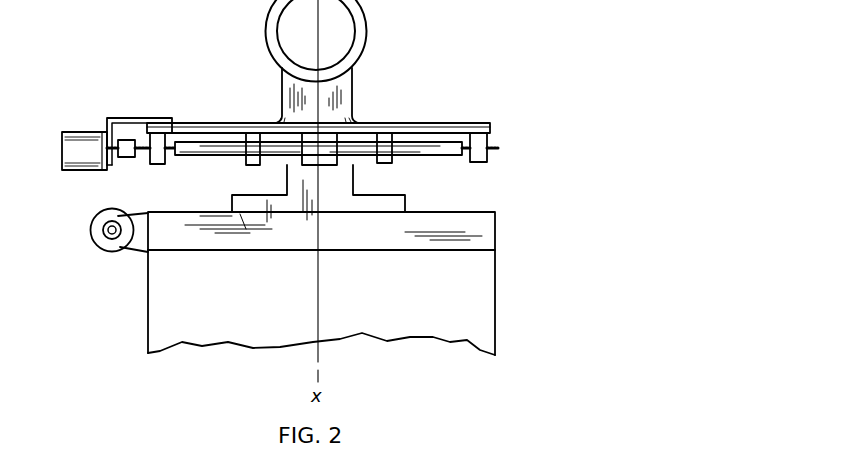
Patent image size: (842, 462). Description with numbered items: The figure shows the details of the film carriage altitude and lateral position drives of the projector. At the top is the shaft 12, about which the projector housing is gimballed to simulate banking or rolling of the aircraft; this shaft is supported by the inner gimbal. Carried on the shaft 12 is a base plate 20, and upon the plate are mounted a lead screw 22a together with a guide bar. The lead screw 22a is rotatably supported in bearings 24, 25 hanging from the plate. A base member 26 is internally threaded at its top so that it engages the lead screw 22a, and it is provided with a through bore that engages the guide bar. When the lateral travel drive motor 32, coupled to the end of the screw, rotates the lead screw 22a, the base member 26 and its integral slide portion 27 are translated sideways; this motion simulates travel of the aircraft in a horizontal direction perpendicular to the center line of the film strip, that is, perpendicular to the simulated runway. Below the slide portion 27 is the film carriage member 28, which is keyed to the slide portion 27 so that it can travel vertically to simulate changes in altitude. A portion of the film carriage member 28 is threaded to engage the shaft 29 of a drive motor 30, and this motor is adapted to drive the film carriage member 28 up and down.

The shaft 12 is at (349, 85).
The base plate 20 is at (488, 123).
The lead screw 22a is at (142, 158).
The bearing 24 is at (168, 160).
The bearing 25 is at (481, 163).
The base member 26 is at (340, 158).
The slide portion 27 is at (263, 194).
The film carriage member 28 is at (496, 228).
The shaft 29 is at (105, 229).
The drive motor 30 is at (118, 251).
The lateral travel drive motor 32 is at (73, 132).